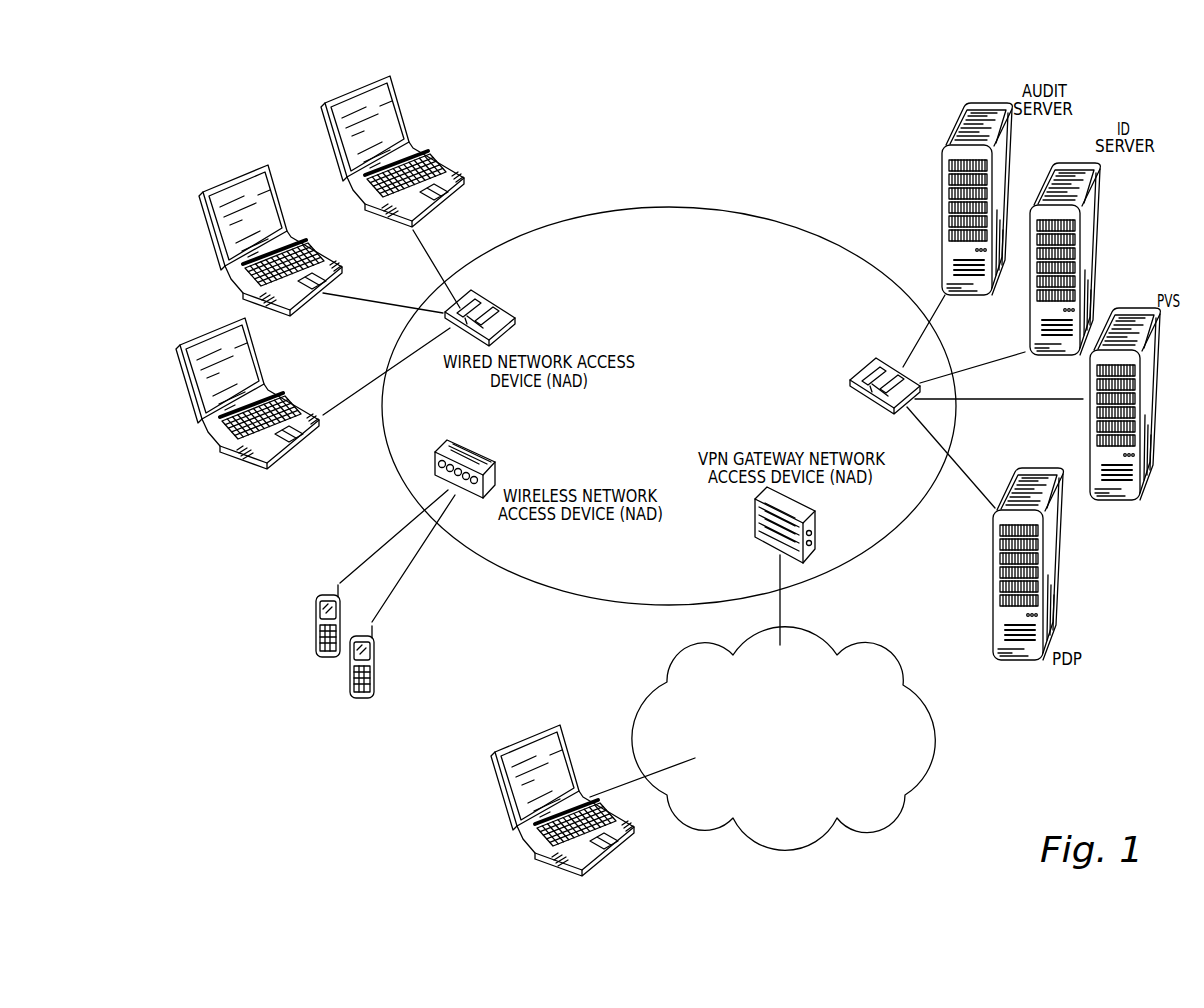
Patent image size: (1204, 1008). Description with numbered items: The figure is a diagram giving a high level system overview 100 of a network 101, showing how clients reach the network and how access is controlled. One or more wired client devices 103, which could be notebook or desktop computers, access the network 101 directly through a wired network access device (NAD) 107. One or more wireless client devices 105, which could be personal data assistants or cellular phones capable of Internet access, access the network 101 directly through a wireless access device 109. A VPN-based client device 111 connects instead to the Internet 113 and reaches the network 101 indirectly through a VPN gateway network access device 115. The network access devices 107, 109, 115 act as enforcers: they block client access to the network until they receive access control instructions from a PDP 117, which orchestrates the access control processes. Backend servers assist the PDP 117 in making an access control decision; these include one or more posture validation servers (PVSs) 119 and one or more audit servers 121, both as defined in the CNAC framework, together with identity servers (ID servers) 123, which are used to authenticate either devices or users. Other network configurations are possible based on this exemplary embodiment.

The high level system overview 100 is at (1084, 75).
The network 101 is at (669, 406).
The wired client devices 103 is at (180, 70).
The wireless client devices 105 is at (292, 582).
The wired network access device (NAD) 107 is at (490, 304).
The wireless access device 109 is at (482, 458).
The VPN-based client device 111 is at (475, 732).
The Internet 113 is at (783, 739).
The VPN gateway network access device 115 is at (754, 518).
The PDP 117 is at (1066, 590).
The posture validation servers (PVSs) 119 is at (1130, 502).
The audit servers 121 is at (954, 122).
The identity servers (ID servers) 123 is at (1100, 224).